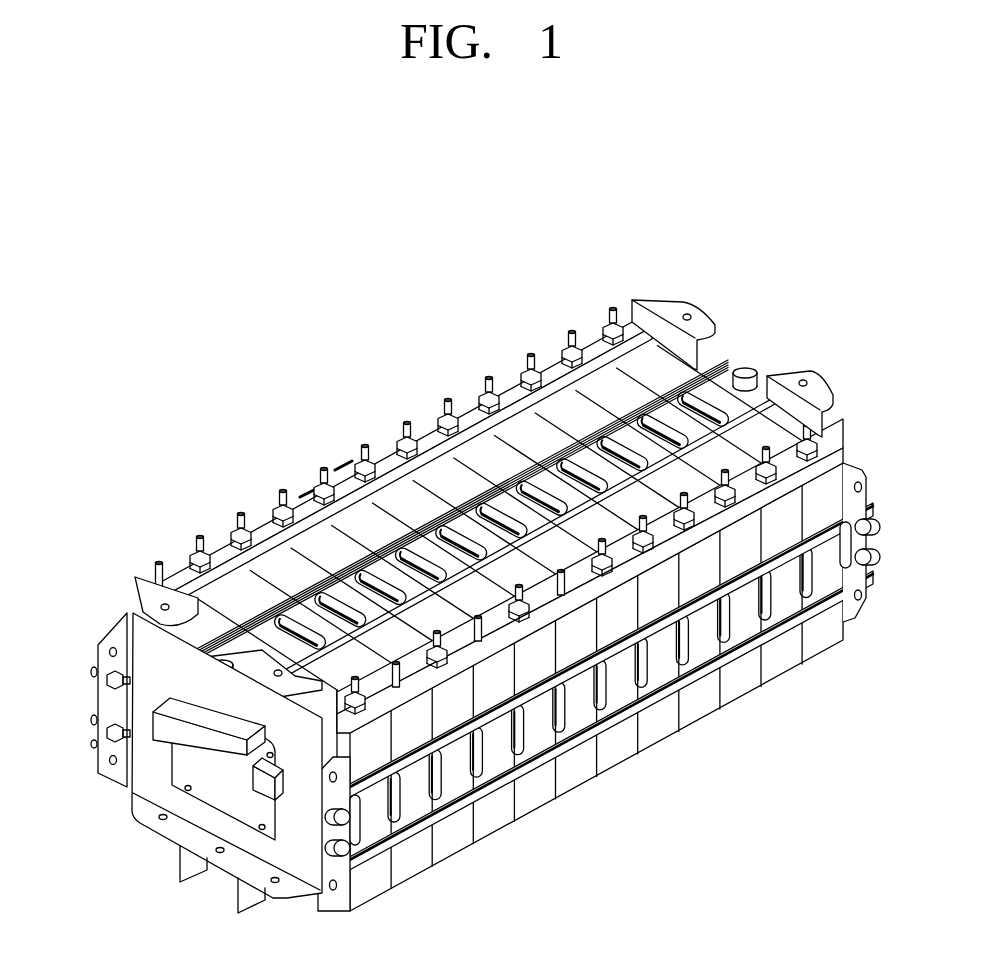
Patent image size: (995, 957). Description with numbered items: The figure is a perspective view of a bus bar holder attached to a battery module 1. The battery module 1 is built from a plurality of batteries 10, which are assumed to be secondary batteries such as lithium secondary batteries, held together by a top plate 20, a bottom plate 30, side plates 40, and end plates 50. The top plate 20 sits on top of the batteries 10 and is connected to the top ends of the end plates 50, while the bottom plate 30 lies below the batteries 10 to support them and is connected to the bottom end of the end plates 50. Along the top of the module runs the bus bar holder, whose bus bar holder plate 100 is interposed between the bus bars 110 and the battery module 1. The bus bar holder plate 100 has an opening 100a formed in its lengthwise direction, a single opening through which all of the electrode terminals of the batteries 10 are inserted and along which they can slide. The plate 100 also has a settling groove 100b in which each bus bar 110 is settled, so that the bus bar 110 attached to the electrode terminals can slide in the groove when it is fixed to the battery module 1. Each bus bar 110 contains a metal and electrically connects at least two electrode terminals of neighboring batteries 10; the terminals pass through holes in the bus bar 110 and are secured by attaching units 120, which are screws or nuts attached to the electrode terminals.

The battery module 1 is at (797, 327).
The batteries 10 is at (488, 818).
The top plate 20 is at (198, 672).
The bottom plate 30 is at (195, 870).
The side plates 40 is at (417, 810).
The end plates 50 is at (187, 803).
The bus bar holder plate 100 is at (401, 461).
The opening 100a is at (347, 462).
The settling groove 100b is at (340, 480).
The bus bar 110 is at (225, 553).
The attaching units 120 is at (198, 557).